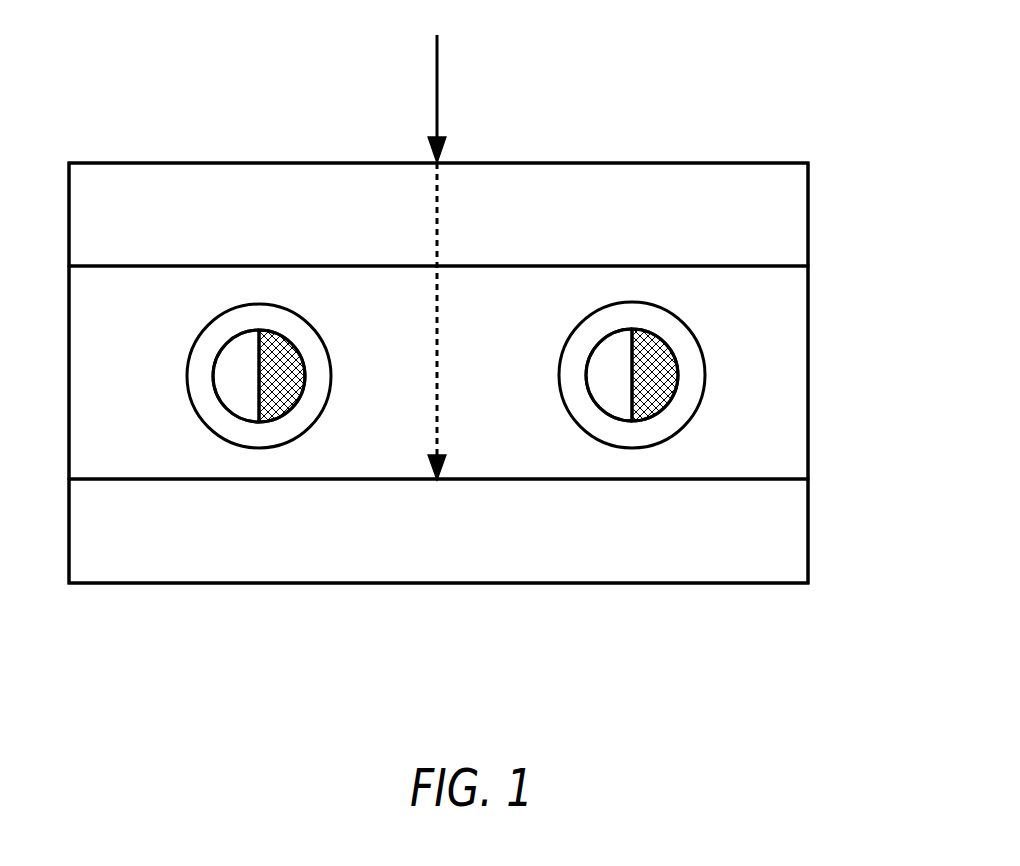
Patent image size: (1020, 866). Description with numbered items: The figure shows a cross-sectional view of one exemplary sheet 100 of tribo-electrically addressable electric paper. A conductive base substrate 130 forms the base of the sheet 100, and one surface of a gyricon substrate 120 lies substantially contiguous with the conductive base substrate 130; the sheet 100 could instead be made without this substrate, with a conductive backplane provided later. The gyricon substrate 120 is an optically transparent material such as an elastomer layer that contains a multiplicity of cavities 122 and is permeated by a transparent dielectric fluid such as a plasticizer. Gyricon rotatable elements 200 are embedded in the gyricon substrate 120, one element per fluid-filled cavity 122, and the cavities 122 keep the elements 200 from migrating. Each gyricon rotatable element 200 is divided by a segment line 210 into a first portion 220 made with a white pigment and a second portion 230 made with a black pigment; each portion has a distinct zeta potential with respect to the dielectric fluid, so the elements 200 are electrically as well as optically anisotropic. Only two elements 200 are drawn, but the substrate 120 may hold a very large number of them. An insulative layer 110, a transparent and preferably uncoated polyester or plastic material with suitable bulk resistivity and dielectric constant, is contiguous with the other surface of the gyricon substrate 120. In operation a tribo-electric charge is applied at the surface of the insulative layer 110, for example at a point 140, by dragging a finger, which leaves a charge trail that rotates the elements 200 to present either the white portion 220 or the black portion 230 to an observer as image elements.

The sheet 100 is at (677, 67).
The insulative layer 110 is at (808, 207).
The gyricon substrate 120 is at (808, 368).
The cavity 122 is at (322, 368).
The conductive base substrate 130 is at (808, 530).
The point 140 is at (438, 70).
The gyricon rotatable element 200 is at (222, 404).
The segment line 210 is at (255, 383).
The first portion 220 is at (240, 342).
The second portion 230 is at (275, 333).